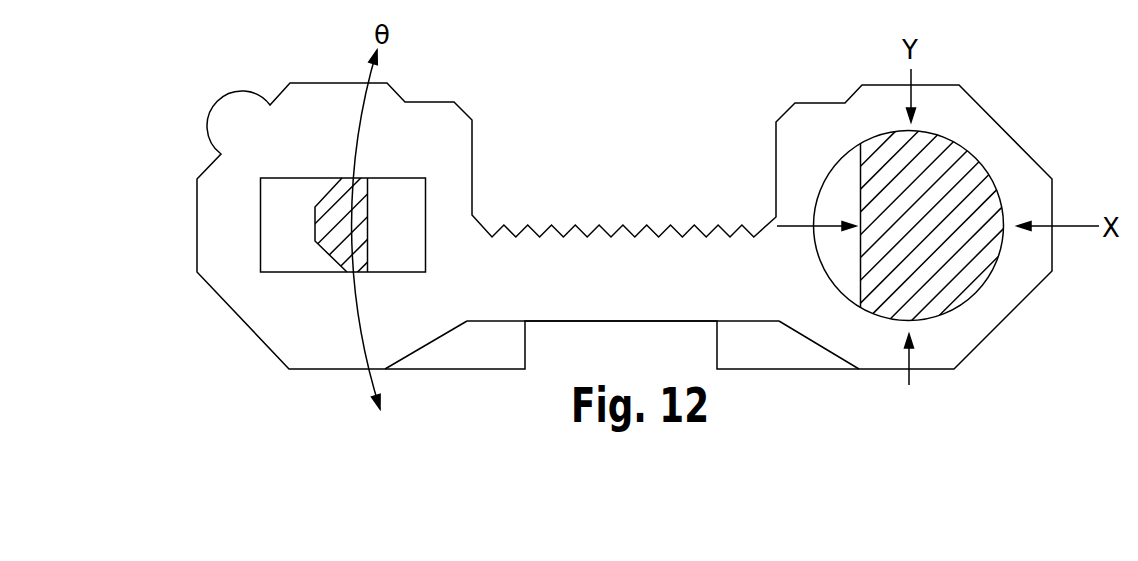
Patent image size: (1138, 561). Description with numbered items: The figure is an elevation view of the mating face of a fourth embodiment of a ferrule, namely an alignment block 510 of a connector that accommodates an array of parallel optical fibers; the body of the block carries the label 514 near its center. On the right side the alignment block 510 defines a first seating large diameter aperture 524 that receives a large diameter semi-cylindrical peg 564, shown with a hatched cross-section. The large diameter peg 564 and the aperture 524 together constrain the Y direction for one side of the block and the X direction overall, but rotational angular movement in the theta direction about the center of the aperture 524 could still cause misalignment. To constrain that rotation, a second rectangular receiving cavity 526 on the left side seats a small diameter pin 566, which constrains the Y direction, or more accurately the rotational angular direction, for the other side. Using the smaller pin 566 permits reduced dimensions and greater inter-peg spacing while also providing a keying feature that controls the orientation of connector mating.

The alignment block 510 is at (176, 73).
The base member 514 is at (637, 292).
The first seating large diameter aperture 524 is at (846, 264).
The second rectangular receiving cavity 526 is at (397, 260).
The large diameter semi-cylindrical peg 564 is at (991, 204).
The small diameter pin 566 is at (324, 222).